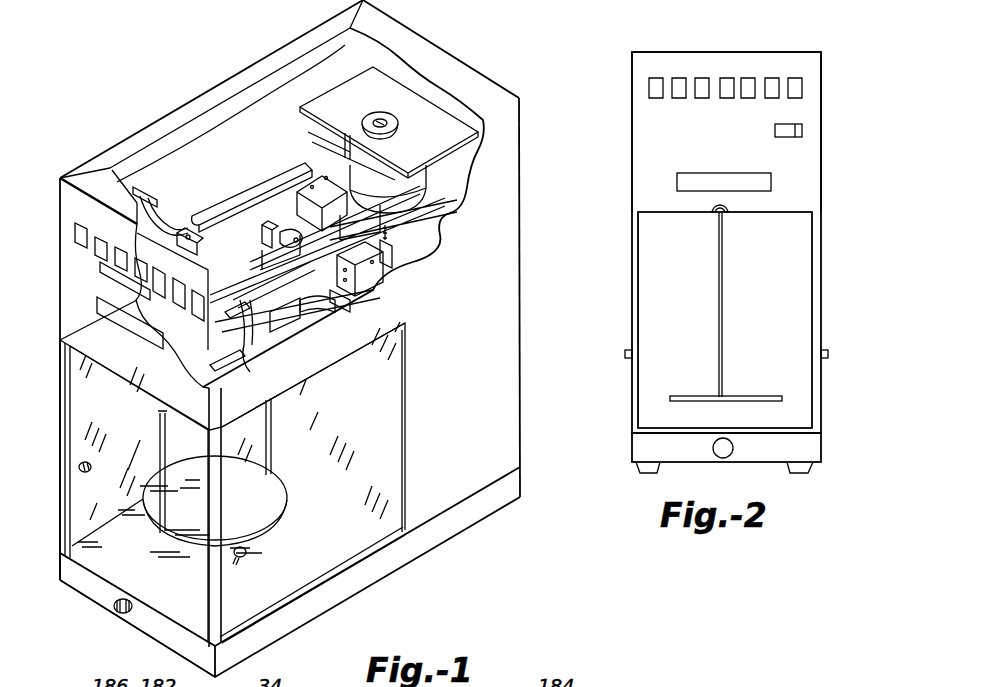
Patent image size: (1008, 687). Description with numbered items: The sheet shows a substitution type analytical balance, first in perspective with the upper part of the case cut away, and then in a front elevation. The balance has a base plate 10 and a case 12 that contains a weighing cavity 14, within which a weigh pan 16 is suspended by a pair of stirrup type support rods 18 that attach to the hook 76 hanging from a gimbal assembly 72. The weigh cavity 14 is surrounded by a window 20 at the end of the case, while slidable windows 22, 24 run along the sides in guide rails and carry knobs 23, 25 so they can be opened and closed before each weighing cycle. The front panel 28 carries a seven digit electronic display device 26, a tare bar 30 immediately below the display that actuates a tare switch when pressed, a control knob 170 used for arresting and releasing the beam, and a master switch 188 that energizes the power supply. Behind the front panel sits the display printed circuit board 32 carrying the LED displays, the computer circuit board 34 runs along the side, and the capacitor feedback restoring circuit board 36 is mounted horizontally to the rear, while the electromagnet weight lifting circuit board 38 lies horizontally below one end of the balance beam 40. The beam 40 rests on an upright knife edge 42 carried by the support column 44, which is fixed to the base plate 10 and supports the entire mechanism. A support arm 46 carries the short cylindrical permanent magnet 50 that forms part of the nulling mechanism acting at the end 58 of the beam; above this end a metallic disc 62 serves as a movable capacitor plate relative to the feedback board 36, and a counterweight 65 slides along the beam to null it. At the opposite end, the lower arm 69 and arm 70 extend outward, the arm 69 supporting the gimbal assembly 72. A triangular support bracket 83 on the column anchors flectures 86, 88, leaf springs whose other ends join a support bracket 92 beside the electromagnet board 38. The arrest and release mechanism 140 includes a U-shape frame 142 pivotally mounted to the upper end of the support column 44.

In FIG. 1, the base plate 10 is at (302, 572).
In FIG. 2, the base plate 10 is at (800, 430).
In FIG. 1, the case 12 is at (463, 380).
In FIG. 2, the case 12 is at (642, 138).
In FIG. 1, the weighing cavity 14 is at (90, 477).
In FIG. 2, the weighing cavity 14 is at (788, 315).
In FIG. 1, the weigh pan 16 is at (285, 508).
In FIG. 2, the weigh pan 16 is at (782, 398).
In FIG. 1, the stirrup type support rods 18 is at (275, 420).
In FIG. 2, the stirrup type support rods 18 is at (720, 327).
In FIG. 1, the window 20 is at (178, 592).
In FIG. 1, the slidable window 22 is at (385, 470).
In FIG. 1, the knob 23 is at (245, 560).
In FIG. 2, the knob 23 is at (828, 356).
In FIG. 1, the slidable window 24 is at (82, 380).
In FIG. 1, the knob 25 is at (79, 464).
In FIG. 2, the knob 25 is at (626, 353).
In FIG. 1, the seven digit electronic display device 26 is at (96, 232).
In FIG. 2, the seven digit electronic display device 26 is at (800, 86).
In FIG. 1, the front panel 28 is at (72, 255).
In FIG. 2, the front panel 28 is at (785, 173).
In FIG. 1, the tare bar 30 is at (107, 310).
In FIG. 2, the tare bar 30 is at (695, 183).
In FIG. 1, the display printed circuit board 32 is at (160, 316).
In FIG. 1, the computer circuit board 34 is at (137, 180).
In FIG. 1, the capacitor feedback restoring circuit board 36 is at (433, 137).
In FIG. 1, the electromagnet weight lifting circuit board 38 is at (250, 372).
In FIG. 1, the balance beam 40 is at (235, 203).
In FIG. 1, the knife edge 42 is at (282, 225).
In FIG. 1, the support column 44 is at (380, 345).
In FIG. 1, the support arm 46 is at (385, 252).
In FIG. 1, the permanent magnet 50 is at (410, 195).
In FIG. 1, the end of the balance beam 58 is at (350, 152).
In FIG. 1, the metallic disc 62 is at (383, 112).
In FIG. 1, the counterweight 65 is at (315, 190).
In FIG. 1, the lower arm 69 is at (205, 312).
In FIG. 1, the arm 70 is at (103, 232).
In FIG. 1, the gimbal assembly 72 is at (248, 348).
In FIG. 2, the hook 76 is at (715, 214).
In FIG. 1, the triangular support bracket 83 is at (366, 300).
In FIG. 1, the flecture 86 is at (378, 284).
In FIG. 1, the flecture 88 is at (350, 302).
In FIG. 1, the support bracket 92 is at (282, 325).
In FIG. 1, the arrest and release mechanism 140 is at (170, 220).
In FIG. 1, the U-shape frame 142 is at (268, 222).
In FIG. 1, the control knob 170 is at (113, 606).
In FIG. 2, the control knob 170 is at (733, 450).
In FIG. 2, the master switch 188 is at (803, 130).